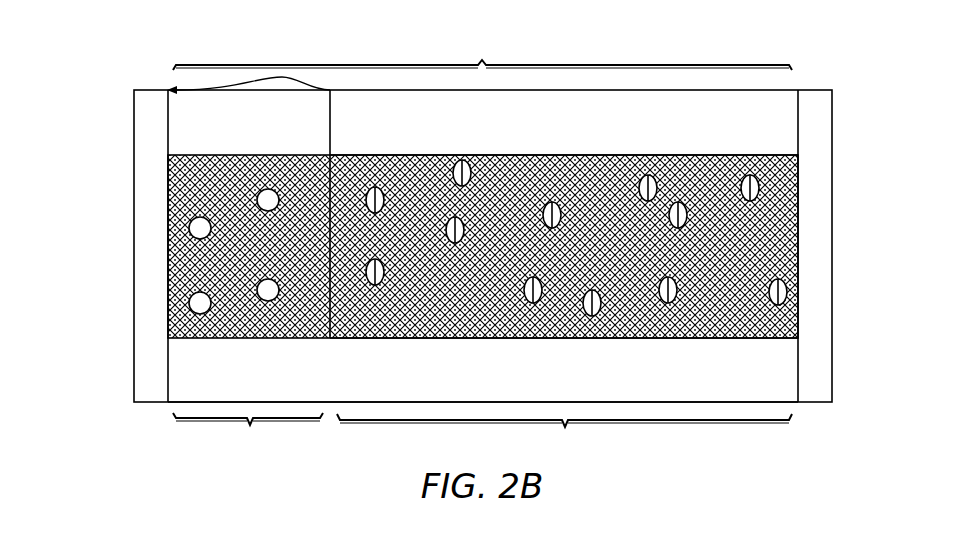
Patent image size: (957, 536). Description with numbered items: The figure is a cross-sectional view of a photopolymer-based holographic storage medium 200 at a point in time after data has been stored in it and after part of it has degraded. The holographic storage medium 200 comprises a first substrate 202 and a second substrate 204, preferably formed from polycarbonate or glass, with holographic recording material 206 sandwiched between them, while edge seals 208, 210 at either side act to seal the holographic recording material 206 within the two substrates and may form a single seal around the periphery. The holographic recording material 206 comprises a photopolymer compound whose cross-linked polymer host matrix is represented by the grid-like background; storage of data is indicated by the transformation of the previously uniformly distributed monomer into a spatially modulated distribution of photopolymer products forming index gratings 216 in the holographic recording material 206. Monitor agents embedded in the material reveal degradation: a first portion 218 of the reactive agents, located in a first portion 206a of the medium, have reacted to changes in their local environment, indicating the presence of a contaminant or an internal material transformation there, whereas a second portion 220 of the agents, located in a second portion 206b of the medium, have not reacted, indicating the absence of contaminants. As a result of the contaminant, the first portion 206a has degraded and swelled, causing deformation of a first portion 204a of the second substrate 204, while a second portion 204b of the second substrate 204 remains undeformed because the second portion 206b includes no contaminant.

The holographic storage medium 200 is at (102, 168).
The first substrate 202 is at (462, 383).
The second substrate 204 is at (482, 185).
The first portion of second substrate 204a is at (277, 137).
The second portion of second substrate 204b is at (511, 134).
The holographic recording material 206 is at (750, 156).
The first portion of medium 206a is at (248, 435).
The second portion of medium 206b is at (564, 436).
The edge seal 208 is at (832, 203).
The edge seal 210 is at (133, 292).
The index gratings 216 is at (697, 340).
The first portion of reactive agents 218 is at (195, 338).
The second portion of reactive agents 220 is at (449, 162).